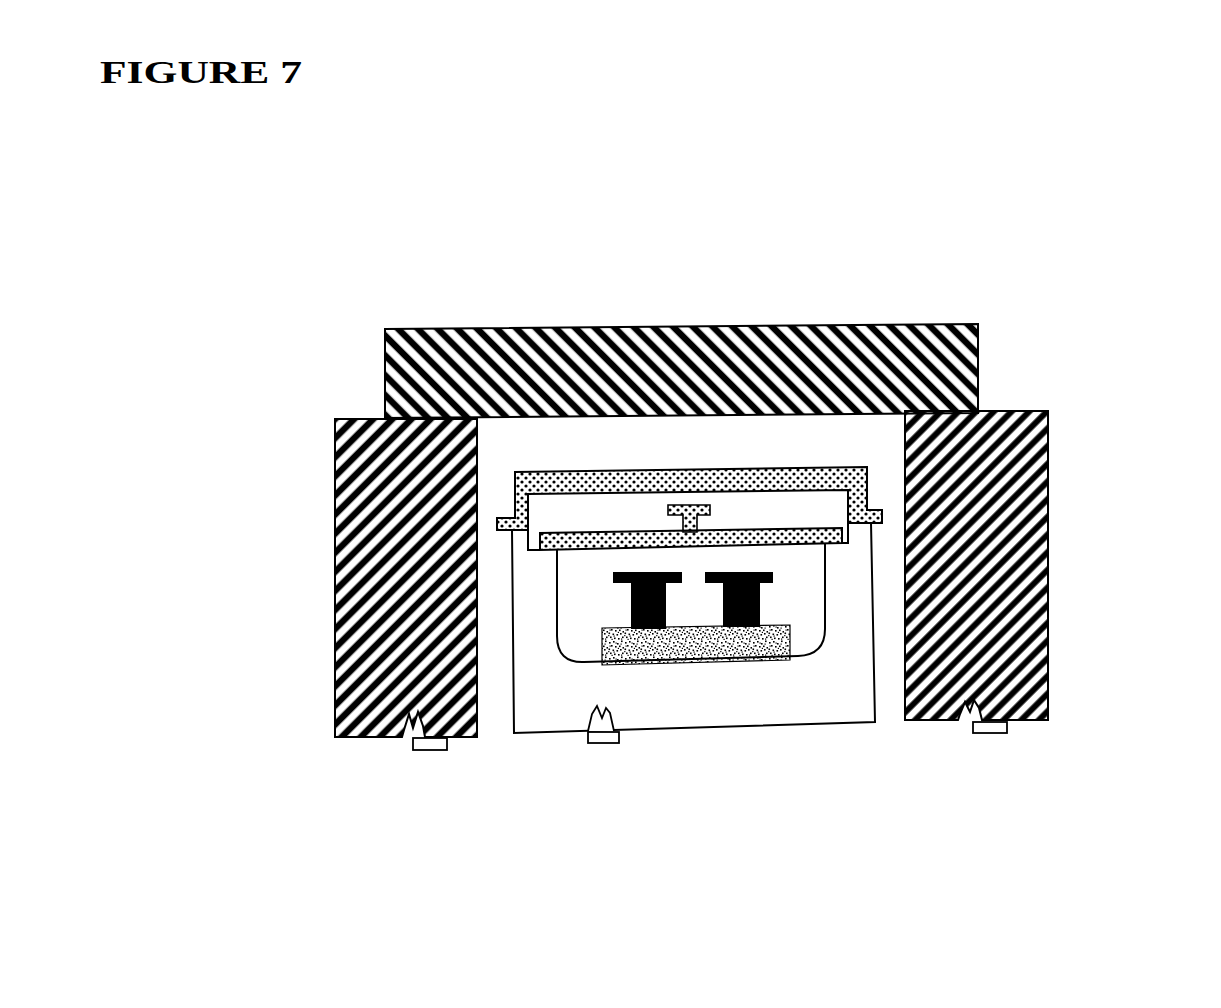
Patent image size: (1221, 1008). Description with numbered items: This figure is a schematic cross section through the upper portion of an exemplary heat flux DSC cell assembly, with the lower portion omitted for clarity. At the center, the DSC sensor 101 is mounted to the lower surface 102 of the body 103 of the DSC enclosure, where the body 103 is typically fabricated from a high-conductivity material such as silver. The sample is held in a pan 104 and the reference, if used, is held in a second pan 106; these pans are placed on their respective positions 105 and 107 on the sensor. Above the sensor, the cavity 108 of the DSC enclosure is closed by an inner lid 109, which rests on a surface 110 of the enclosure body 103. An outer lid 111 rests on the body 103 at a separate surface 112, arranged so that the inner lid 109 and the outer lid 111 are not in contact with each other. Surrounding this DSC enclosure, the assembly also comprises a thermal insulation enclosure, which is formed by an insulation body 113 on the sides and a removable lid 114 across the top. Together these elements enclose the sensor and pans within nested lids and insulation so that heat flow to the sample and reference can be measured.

The DSC sensor 101 is at (627, 617).
The lower surface 102 is at (650, 670).
The body 103 is at (716, 706).
The pan 104 is at (612, 586).
The position 105 is at (627, 594).
The pan 106 is at (962, 722).
The position 107 is at (767, 590).
The cavity 108 is at (780, 532).
The inner lid 109 is at (748, 522).
The surface 110 is at (775, 580).
The outer lid 111 is at (625, 458).
The surface 112 is at (840, 555).
The body 113 is at (357, 413).
The removable lid 114 is at (483, 323).